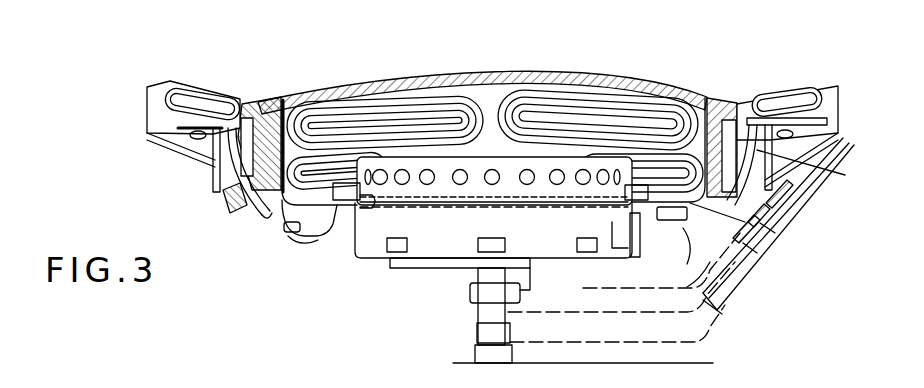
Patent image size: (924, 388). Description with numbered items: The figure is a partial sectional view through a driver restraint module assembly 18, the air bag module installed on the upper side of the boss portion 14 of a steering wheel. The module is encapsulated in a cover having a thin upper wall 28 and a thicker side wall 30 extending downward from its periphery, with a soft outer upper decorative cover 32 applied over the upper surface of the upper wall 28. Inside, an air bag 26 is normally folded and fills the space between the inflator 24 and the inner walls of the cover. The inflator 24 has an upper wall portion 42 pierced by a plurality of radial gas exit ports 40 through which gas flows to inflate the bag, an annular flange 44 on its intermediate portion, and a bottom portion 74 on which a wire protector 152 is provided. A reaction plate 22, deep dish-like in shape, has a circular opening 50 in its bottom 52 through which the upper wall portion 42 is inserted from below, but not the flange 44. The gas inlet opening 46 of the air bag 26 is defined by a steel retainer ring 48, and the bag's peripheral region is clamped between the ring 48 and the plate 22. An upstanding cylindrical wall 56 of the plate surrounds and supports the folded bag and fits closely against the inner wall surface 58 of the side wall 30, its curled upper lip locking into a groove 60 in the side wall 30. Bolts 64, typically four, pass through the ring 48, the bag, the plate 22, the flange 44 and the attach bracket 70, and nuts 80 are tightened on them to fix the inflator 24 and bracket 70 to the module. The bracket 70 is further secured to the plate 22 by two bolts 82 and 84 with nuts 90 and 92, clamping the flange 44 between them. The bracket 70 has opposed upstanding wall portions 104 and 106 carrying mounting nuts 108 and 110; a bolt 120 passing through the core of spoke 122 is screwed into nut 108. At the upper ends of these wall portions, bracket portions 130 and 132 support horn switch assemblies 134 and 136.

The boss portion 14 is at (470, 297).
The driver restraint module assembly 18 is at (602, 60).
The reaction plate 22 is at (759, 250).
The inflator 24 is at (366, 258).
The air bag 26 is at (373, 104).
The upper wall 28 is at (484, 80).
The side wall 30 is at (252, 97).
The outer upper decorative cover 32 is at (317, 88).
The radial gas exit ports 40 is at (462, 186).
The upper wall portion 42 is at (519, 186).
The annular flange 44 is at (447, 186).
The gas inlet opening 46 is at (602, 250).
The retainer ring 48 is at (626, 203).
The circular opening 50 is at (360, 247).
The bottom 52 is at (245, 222).
The cylindrical wall 56 is at (226, 196).
The inner wall surface 58 is at (284, 100).
The groove 60 is at (220, 160).
The bolts 64 is at (323, 230).
The attach bracket 70 is at (747, 273).
The bottom portion 74 is at (444, 245).
The nuts 80 is at (645, 250).
The bolt 82 is at (685, 277).
The bolt 84 is at (290, 238).
The nut 90 is at (668, 249).
The nut 92 is at (288, 230).
The upstanding wall portion 104 is at (812, 160).
The upstanding wall portion 106 is at (150, 130).
The mounting nut 108 is at (800, 188).
The mounting nut 110 is at (218, 195).
The bolt 120 is at (795, 210).
The spoke 122 is at (714, 315).
The bracket portion 130 is at (839, 110).
The bracket portion 132 is at (144, 101).
The horn switch assembly 134 is at (780, 95).
The horn switch assembly 136 is at (204, 90).
The wire protector 152 is at (528, 270).